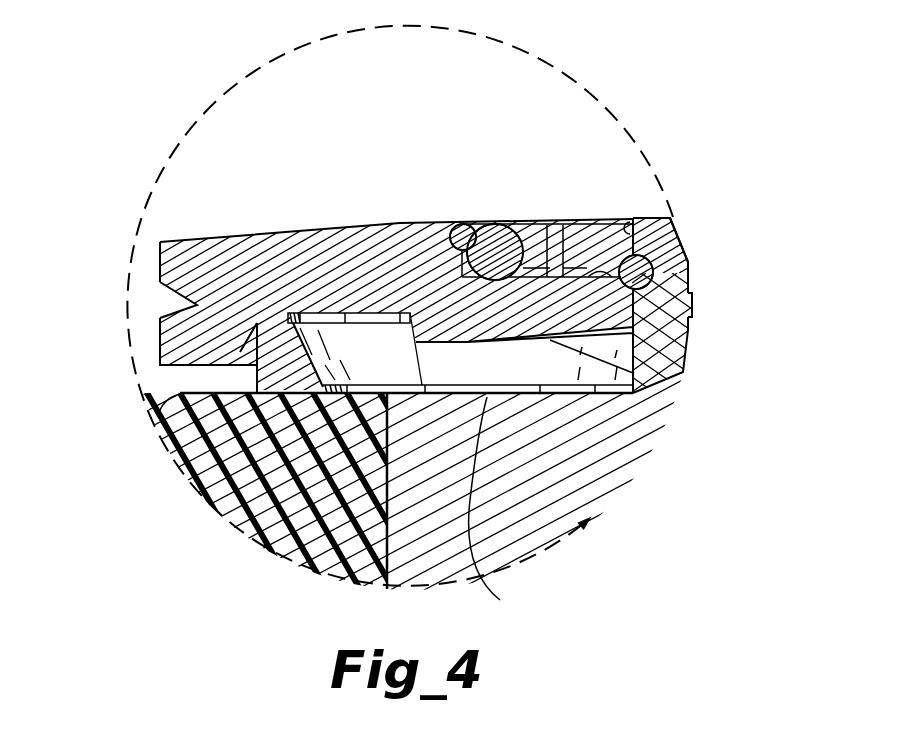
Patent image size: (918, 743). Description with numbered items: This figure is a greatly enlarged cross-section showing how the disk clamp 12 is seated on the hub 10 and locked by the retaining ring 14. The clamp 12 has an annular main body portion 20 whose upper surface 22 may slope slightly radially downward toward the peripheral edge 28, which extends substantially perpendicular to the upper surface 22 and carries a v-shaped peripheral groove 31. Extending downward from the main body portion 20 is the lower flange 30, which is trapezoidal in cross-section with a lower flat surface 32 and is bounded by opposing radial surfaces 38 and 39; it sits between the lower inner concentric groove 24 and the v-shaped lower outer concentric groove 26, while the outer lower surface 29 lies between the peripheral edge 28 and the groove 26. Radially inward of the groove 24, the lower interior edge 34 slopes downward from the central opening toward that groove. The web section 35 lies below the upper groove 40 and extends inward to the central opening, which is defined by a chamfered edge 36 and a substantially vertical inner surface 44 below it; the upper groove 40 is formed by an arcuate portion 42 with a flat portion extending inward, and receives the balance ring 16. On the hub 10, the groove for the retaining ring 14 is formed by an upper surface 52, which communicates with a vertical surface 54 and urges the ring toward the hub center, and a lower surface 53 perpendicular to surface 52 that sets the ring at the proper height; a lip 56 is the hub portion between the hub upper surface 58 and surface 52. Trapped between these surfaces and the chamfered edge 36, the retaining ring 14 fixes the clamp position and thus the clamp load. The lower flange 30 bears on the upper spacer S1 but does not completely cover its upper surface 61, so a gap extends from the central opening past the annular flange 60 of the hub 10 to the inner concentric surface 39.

The hub 10 is at (590, 478).
The disk clamp 12 is at (285, 140).
The retaining ring 14 is at (670, 263).
The balance ring 16 is at (507, 217).
The annular main body portion 20 is at (230, 262).
The upper surface 22 is at (318, 238).
The lower inner concentric groove 24 is at (348, 335).
The lower outer concentric groove 26 is at (247, 345).
The peripheral edge 28 is at (158, 270).
The outer lower surface 29 is at (183, 372).
The lower flange 30 is at (247, 507).
The peripheral groove 31 is at (195, 306).
The lower flat surface 32 is at (243, 533).
The lower interior edge 34 is at (655, 383).
The web section 35 is at (547, 217).
The chamfered edge 36 is at (593, 275).
The radial surface 38 is at (190, 470).
The inner concentric surface 39 is at (316, 360).
The upper groove 40 is at (563, 220).
The arcuate portion 42 is at (477, 195).
The vertical inner surface 44 is at (683, 330).
The upper groove surface 52 is at (653, 257).
The lower groove surface 53 is at (690, 305).
The vertical surface 54 is at (632, 222).
The lip 56 is at (670, 218).
The upper surface of the hub 58 is at (660, 192).
The annular flange 60 is at (502, 507).
The upper surface of the spacer 61 is at (180, 392).
The upper spacer S1 is at (292, 560).